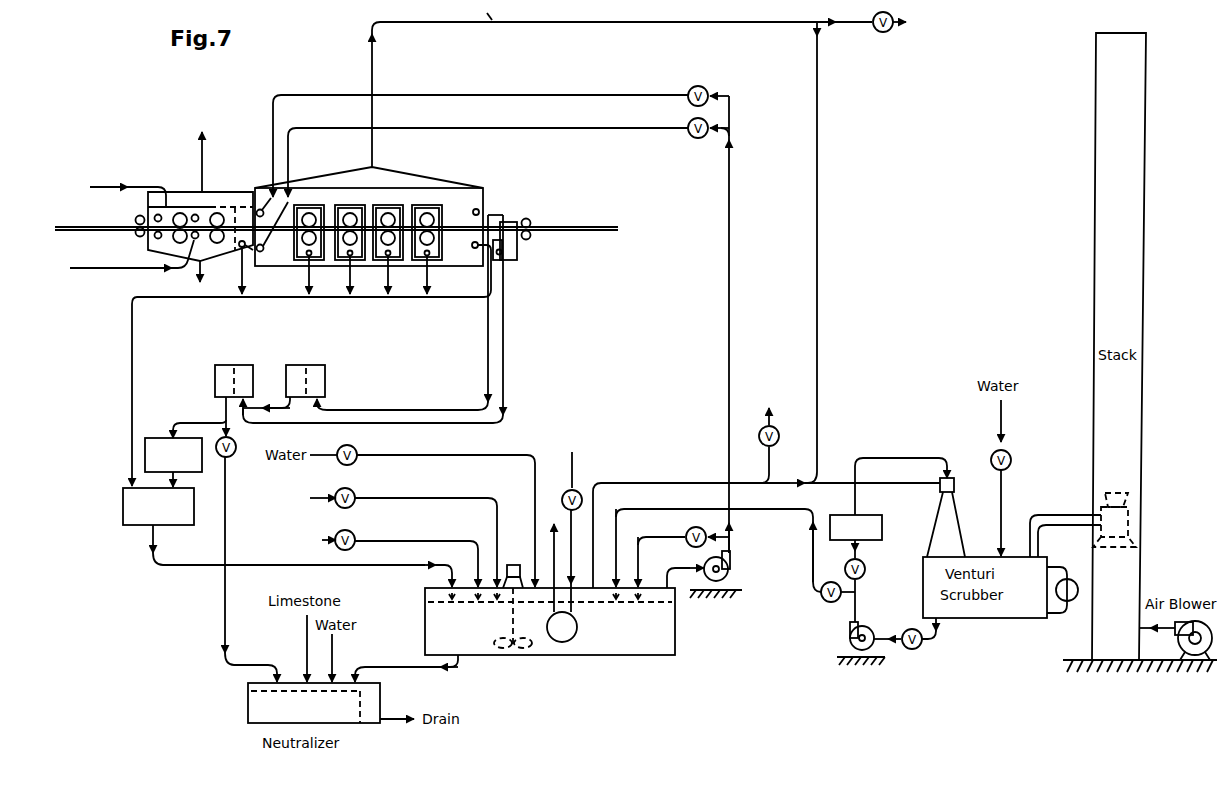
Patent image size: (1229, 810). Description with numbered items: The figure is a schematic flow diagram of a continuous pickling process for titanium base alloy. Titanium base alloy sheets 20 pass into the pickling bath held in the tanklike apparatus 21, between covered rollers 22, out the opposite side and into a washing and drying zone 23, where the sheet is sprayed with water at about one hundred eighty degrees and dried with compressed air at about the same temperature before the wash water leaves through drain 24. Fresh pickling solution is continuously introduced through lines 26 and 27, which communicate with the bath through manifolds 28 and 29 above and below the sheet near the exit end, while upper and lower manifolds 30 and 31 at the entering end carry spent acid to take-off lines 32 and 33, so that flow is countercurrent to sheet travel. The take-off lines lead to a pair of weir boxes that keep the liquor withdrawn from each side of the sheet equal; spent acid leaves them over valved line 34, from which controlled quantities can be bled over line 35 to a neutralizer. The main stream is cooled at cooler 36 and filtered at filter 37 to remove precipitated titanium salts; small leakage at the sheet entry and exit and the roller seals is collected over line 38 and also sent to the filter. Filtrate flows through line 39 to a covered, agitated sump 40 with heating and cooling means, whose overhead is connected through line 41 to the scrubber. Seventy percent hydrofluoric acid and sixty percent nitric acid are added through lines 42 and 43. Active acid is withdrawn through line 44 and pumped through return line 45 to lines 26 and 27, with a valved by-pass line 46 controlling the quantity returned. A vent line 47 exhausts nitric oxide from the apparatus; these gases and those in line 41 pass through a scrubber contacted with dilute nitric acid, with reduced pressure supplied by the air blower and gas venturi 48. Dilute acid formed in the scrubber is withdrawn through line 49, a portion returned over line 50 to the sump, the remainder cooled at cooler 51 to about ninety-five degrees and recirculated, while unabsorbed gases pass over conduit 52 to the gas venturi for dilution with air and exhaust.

The titanium base alloy sheets 20 is at (103, 227).
The tanklike apparatus 21 is at (323, 169).
The covered rollers 22 is at (432, 222).
The washing and drying zone 23 is at (192, 184).
The drain 24 is at (201, 270).
The line 26 is at (460, 129).
The line 27 is at (458, 96).
The manifold 28 is at (257, 200).
The manifold 29 is at (262, 251).
The upper manifold 30 is at (479, 210).
The lower manifold 31 is at (472, 248).
The take-off line 32 is at (503, 360).
The take-off line 33 is at (488, 353).
The line 34 is at (220, 406).
The line 35 is at (224, 613).
The cooler 36 is at (163, 440).
The filter 37 is at (123, 514).
The line 38 is at (343, 298).
The line 39 is at (196, 566).
The sump 40 is at (625, 638).
The line 41 is at (637, 470).
The line 42 is at (458, 498).
The line 43 is at (458, 541).
The line 44 is at (694, 570).
The return line 45 is at (730, 316).
The valved by-pass line 46 is at (652, 537).
The vent line 47 is at (373, 58).
The air blower and gas venturi 48 is at (1176, 570).
The line 49 is at (920, 458).
The line 50 is at (778, 510).
The cooler 51 is at (886, 541).
The conduit 52 is at (1068, 517).